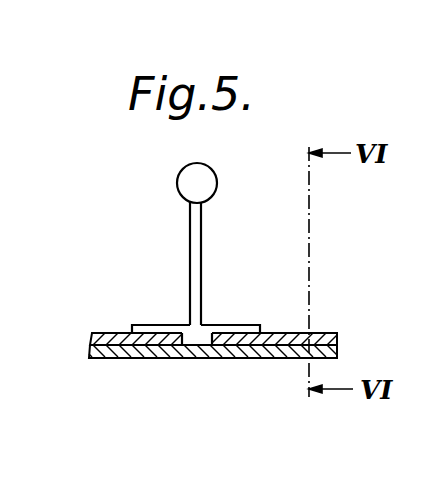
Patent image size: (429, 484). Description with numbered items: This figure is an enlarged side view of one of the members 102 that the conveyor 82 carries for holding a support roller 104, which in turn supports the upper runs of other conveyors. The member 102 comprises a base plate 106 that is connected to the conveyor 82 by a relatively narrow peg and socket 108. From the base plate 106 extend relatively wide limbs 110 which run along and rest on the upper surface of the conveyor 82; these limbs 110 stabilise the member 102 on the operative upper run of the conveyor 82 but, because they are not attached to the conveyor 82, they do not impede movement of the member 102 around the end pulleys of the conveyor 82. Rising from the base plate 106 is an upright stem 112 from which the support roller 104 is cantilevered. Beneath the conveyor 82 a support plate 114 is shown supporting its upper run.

The conveyor 82 is at (297, 333).
The member 102 is at (218, 265).
The support roller 104 is at (205, 175).
The base plate 106 is at (240, 316).
The peg and socket 108 is at (188, 337).
The limbs 110 is at (132, 325).
The upright stem 112 is at (190, 228).
The support plate 114 is at (337, 349).